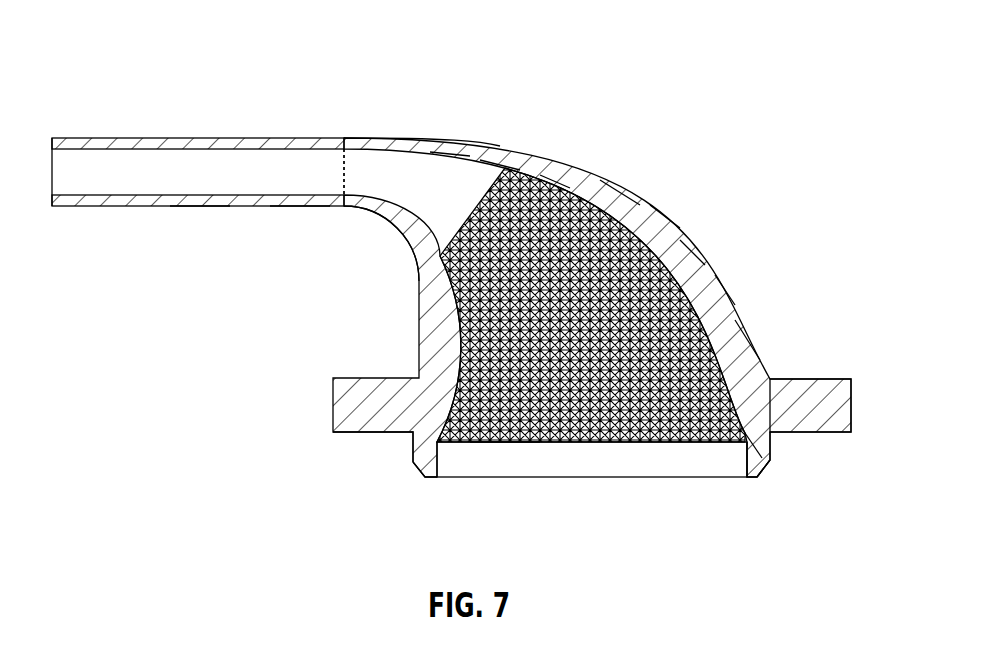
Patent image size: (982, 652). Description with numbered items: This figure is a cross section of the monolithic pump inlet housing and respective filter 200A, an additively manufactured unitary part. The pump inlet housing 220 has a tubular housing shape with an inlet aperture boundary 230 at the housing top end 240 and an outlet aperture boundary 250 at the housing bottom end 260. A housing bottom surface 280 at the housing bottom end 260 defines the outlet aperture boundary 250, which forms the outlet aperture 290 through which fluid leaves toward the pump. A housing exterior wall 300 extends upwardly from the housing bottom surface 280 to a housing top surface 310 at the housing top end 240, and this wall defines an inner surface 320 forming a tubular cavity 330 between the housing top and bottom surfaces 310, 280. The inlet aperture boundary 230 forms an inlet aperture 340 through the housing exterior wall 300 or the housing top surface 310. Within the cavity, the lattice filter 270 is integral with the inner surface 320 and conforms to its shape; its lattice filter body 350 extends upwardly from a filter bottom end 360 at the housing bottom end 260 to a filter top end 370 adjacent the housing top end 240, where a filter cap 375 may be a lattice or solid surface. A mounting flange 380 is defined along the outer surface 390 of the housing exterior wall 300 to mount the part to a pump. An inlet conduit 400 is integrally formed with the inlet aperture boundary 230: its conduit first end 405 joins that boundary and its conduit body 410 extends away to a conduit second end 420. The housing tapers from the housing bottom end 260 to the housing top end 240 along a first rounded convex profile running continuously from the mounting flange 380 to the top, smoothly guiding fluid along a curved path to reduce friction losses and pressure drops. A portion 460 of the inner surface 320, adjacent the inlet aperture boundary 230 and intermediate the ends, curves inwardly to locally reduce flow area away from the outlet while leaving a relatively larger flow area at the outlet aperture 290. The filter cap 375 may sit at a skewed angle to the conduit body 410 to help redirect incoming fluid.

The pump inlet housing and respective filter 200A is at (733, 139).
The pump inlet housing 220 is at (731, 295).
The inlet aperture boundary 230 is at (388, 138).
The housing top end 240 is at (505, 158).
The outlet aperture boundary 250 is at (759, 468).
The housing bottom end 260 is at (412, 451).
The lattice filter 270 is at (502, 443).
The housing bottom surface 280 is at (440, 478).
The outlet aperture 290 is at (607, 462).
The housing exterior wall 300 is at (667, 214).
The housing top surface 310 is at (447, 144).
The inner surface 320 is at (427, 263).
The tubular cavity 330 is at (622, 194).
The inlet aperture 340 is at (362, 160).
The lattice filter body 350 is at (693, 252).
The filter bottom end 360 is at (757, 457).
The filter top end 370 is at (552, 180).
The filter cap 375 is at (487, 197).
The mounting flange 380 is at (845, 410).
The outer surface 390 is at (758, 347).
The inlet conduit 400 is at (96, 138).
The conduit first end 405 is at (297, 206).
The conduit body 410 is at (197, 206).
The conduit second end 420 is at (77, 206).
The portion of the inner surface 460 is at (435, 320).